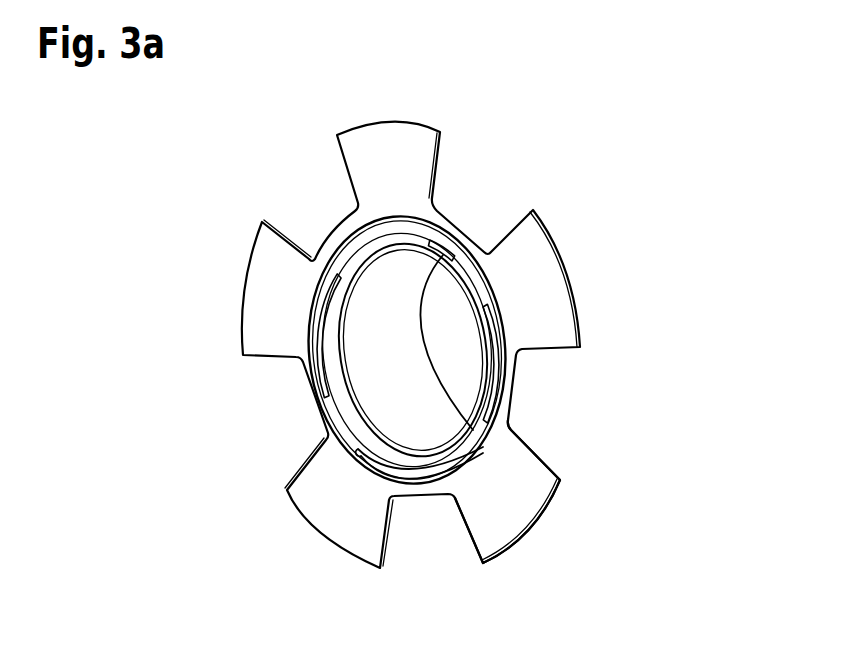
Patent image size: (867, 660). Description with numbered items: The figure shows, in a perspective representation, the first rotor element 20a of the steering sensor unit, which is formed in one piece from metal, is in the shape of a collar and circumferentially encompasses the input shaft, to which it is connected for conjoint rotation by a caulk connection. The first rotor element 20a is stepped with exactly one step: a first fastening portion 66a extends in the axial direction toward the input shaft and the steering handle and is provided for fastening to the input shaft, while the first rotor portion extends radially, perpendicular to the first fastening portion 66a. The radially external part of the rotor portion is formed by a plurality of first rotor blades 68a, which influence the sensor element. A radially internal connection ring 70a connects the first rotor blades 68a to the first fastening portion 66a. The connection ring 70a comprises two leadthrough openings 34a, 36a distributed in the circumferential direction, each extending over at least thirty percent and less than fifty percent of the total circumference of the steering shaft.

The first rotor element 20a is at (640, 228).
The first fastening portion 66a is at (387, 290).
The leadthrough opening 34a is at (304, 379).
The leadthrough opening 36a is at (420, 492).
The connection ring 70a is at (340, 438).
The first rotor blades 68a is at (495, 492).